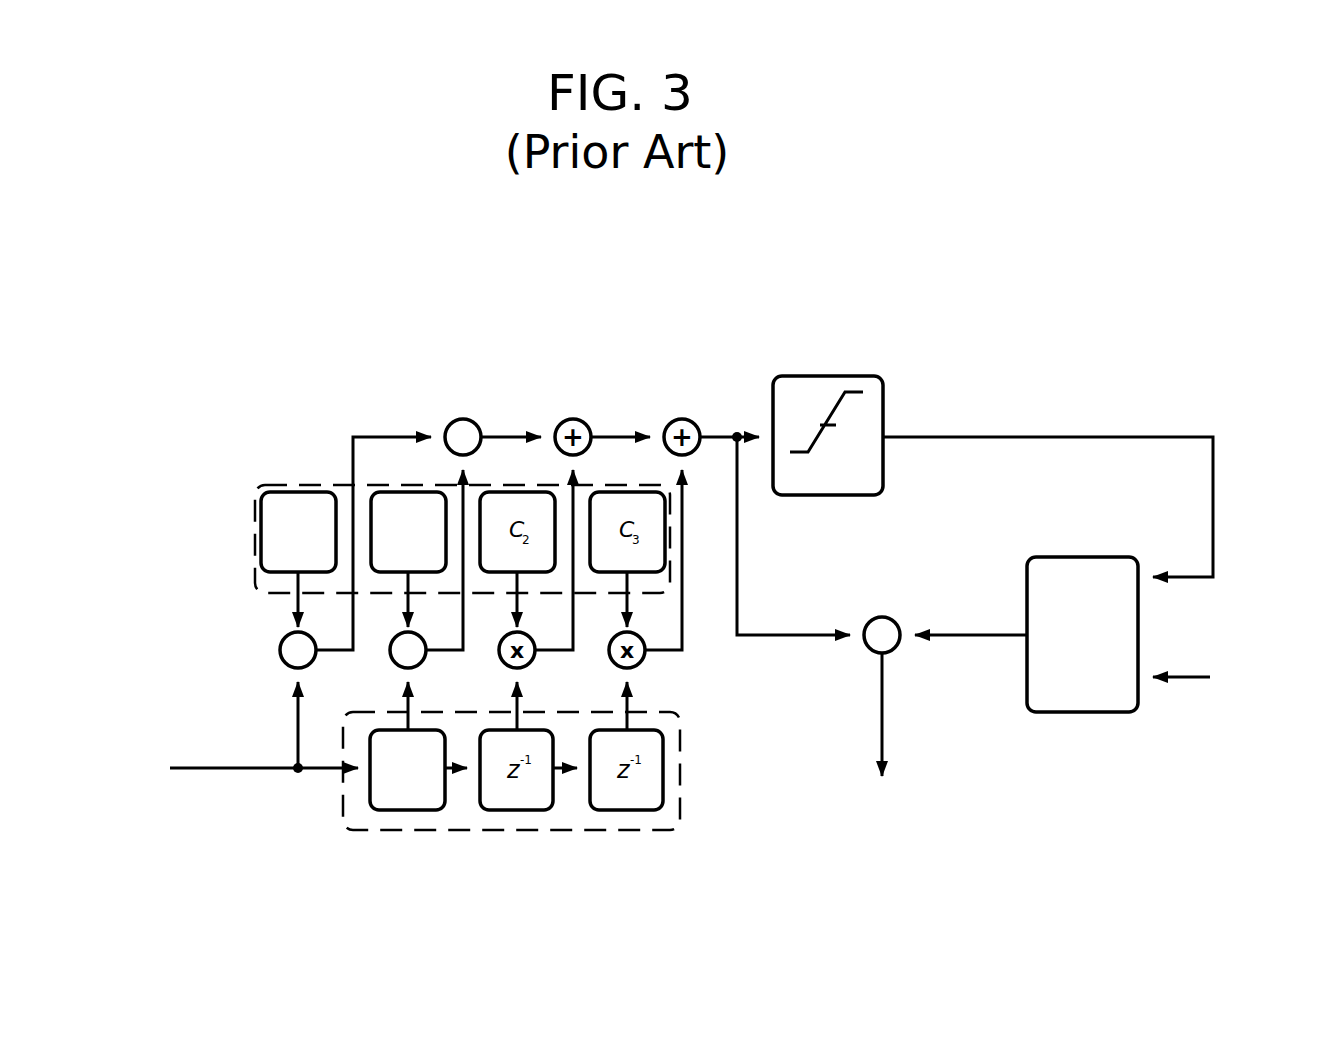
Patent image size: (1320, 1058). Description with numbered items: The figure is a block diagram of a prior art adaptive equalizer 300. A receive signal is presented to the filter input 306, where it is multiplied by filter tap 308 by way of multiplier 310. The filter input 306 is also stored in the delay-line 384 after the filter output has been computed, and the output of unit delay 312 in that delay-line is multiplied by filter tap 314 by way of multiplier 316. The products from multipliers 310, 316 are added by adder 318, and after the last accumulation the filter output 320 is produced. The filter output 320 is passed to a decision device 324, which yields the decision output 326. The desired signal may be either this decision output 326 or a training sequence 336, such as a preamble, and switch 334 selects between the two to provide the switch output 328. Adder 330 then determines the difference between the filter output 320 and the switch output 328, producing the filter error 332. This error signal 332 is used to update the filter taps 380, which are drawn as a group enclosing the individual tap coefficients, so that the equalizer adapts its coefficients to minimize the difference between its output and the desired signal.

The adaptive equalizer 300 is at (1150, 196).
The filter input 306 is at (240, 768).
The filter tap 308 is at (258, 518).
The multiplier 310 is at (281, 650).
The unit delay 312 is at (404, 810).
The filter tap 314 is at (406, 492).
The multiplier 316 is at (392, 652).
The adder 318 is at (463, 419).
The filter output 320 is at (722, 437).
The decision device 324 is at (848, 376).
The decision output 326 is at (938, 437).
The switch output 328 is at (975, 635).
The adder 330 is at (890, 617).
The filter error 332 is at (886, 712).
The switch 334 is at (1092, 712).
The training sequence 336 is at (1194, 677).
The filter taps 380 is at (300, 485).
The delay-line 384 is at (343, 780).